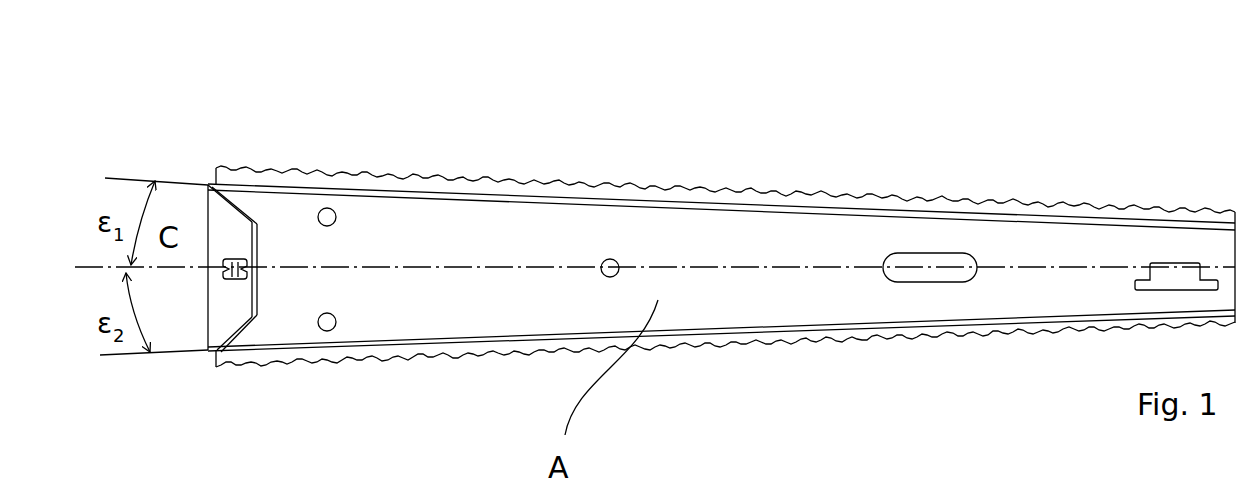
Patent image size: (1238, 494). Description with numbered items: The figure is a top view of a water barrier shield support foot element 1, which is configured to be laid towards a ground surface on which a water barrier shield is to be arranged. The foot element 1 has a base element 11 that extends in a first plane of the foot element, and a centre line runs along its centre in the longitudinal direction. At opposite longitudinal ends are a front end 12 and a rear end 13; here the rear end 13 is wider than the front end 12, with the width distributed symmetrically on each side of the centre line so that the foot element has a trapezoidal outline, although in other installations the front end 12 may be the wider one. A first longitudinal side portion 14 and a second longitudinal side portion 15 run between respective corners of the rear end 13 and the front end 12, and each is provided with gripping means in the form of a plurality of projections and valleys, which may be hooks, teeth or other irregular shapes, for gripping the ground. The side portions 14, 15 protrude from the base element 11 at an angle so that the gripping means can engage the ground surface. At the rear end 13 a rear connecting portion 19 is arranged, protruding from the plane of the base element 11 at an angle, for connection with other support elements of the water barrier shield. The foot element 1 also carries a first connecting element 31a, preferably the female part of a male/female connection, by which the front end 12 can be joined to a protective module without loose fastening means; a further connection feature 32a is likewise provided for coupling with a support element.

The water barrier shield support foot element 1 is at (353, 140).
The base element 11 is at (535, 222).
The front end 12 is at (1230, 248).
The rear end 13 is at (208, 300).
The first longitudinal side portion 14 is at (857, 197).
The second longitudinal side portion 15 is at (748, 342).
The rear connecting portion 19 is at (233, 313).
The first connecting element 31a is at (1180, 283).
The clip 32a is at (257, 278).